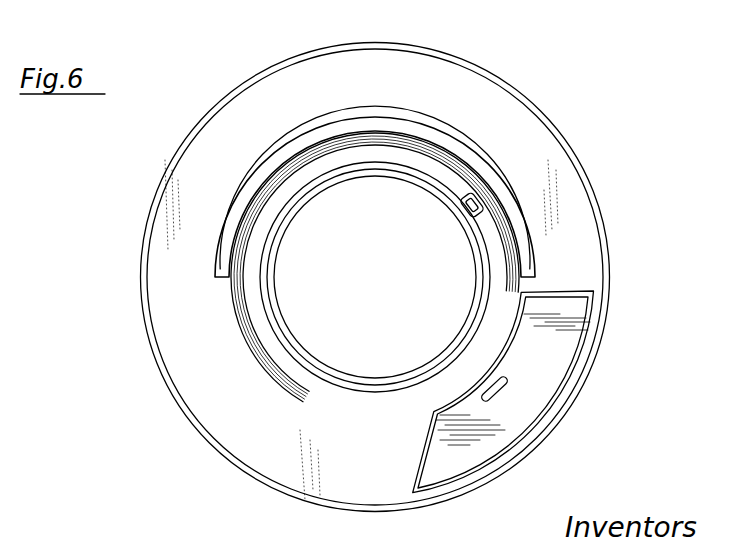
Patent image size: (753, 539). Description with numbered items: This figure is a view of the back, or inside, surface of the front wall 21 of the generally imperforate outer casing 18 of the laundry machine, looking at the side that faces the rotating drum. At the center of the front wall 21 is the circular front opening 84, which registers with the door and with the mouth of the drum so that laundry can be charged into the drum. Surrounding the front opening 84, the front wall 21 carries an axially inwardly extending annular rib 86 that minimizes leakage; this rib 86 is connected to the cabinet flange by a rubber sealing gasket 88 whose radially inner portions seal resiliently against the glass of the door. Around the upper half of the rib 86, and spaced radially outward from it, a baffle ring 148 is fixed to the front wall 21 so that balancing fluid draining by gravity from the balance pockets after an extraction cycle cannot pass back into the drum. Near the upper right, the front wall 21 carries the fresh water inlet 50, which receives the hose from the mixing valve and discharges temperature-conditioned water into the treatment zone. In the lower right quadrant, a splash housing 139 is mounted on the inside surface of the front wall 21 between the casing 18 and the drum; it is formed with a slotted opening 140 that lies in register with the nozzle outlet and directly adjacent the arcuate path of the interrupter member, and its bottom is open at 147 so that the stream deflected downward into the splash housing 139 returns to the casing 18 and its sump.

The outer casing 18 is at (152, 398).
The front wall 21 is at (229, 427).
The fresh water inlet 50 is at (477, 191).
The front opening 84 is at (267, 299).
The annular rib 86 is at (339, 148).
The rubber sealing gasket 88 is at (422, 182).
The splash housing 139 is at (573, 345).
The slotted opening 140 is at (497, 393).
The open bottom of splash housing 147 is at (452, 488).
The baffle ring 148 is at (400, 118).